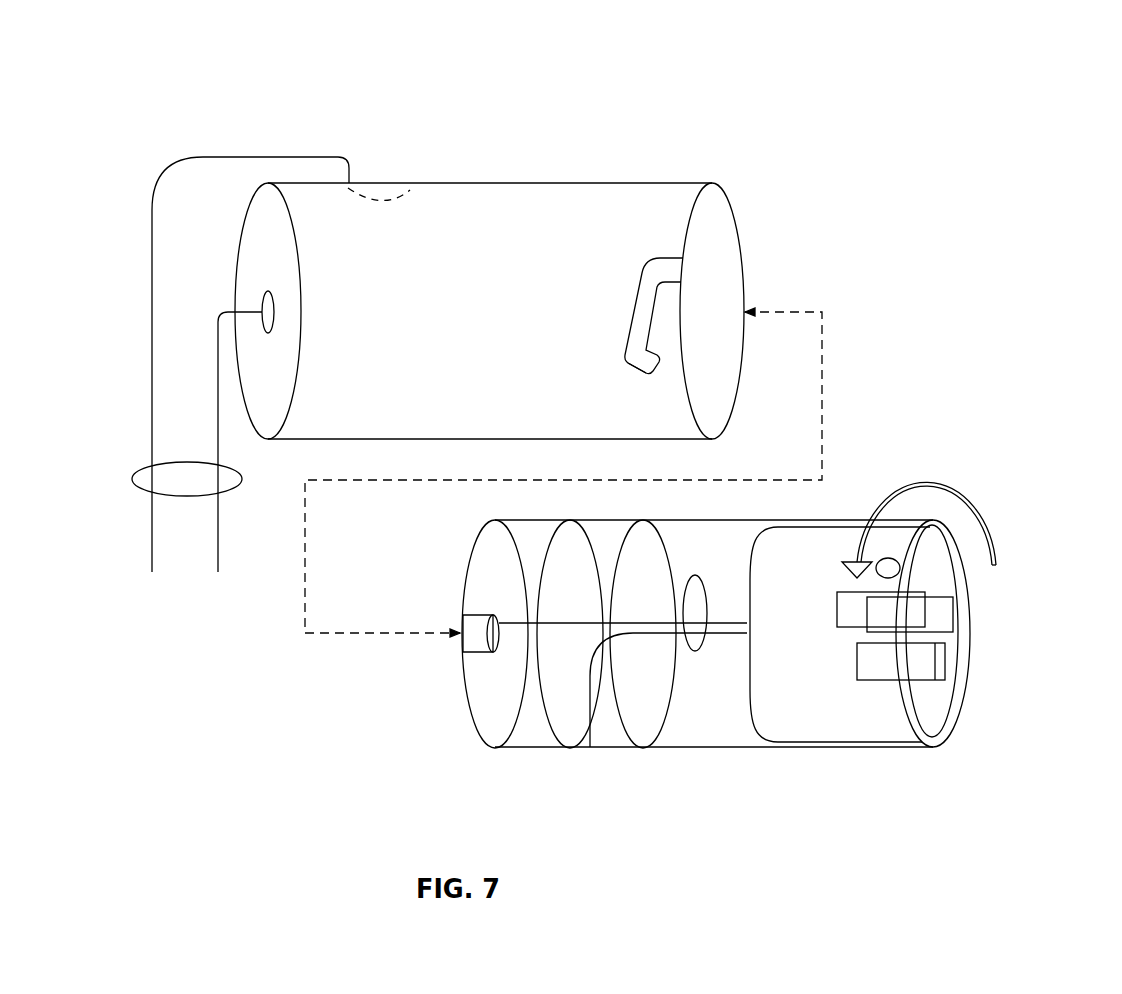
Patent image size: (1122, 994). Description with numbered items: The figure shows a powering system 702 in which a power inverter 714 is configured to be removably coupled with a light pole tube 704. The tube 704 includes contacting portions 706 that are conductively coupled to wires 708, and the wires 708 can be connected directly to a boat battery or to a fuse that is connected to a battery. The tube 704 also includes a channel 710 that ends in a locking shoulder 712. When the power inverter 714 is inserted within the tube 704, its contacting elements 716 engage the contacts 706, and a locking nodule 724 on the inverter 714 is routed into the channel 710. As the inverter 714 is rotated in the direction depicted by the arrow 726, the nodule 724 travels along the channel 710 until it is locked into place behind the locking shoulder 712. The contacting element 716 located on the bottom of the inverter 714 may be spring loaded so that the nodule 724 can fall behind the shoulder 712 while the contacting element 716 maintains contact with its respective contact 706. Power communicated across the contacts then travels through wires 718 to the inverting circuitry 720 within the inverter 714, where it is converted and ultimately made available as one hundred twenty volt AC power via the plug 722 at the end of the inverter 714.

The powering system 702 is at (200, 74).
The light pole tube 704 is at (467, 326).
The contacting portions 706 is at (382, 203).
The wires 708 is at (143, 488).
The channel 710 is at (634, 284).
The locking shoulder 712 is at (638, 371).
The power inverter 714 is at (714, 766).
The contacting elements 716 is at (457, 648).
The wires 718 is at (695, 653).
The inverting circuitry 720 is at (779, 703).
The plug 722 is at (978, 658).
The locking nodule 724 is at (890, 557).
The arrow 726 is at (988, 512).